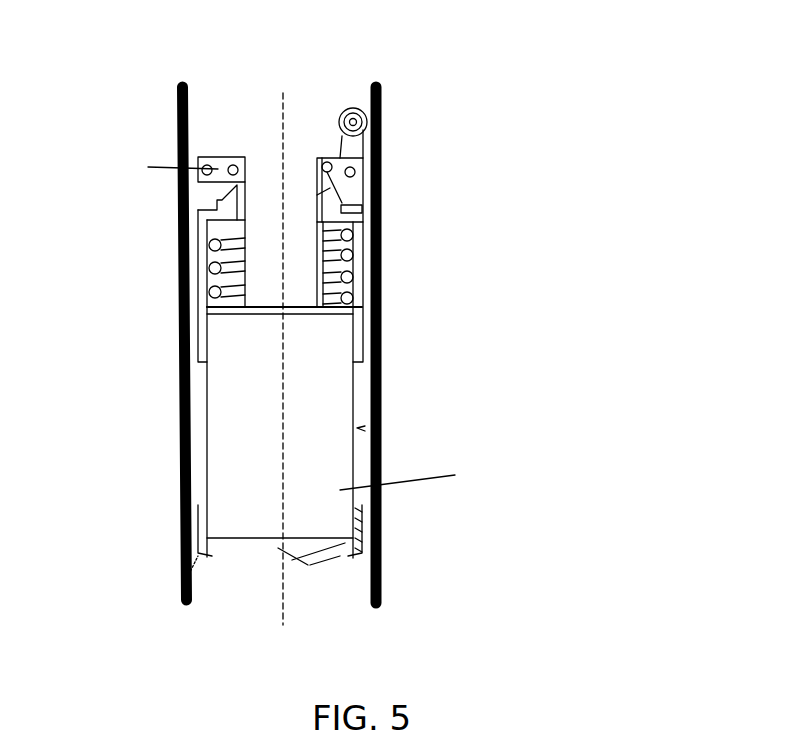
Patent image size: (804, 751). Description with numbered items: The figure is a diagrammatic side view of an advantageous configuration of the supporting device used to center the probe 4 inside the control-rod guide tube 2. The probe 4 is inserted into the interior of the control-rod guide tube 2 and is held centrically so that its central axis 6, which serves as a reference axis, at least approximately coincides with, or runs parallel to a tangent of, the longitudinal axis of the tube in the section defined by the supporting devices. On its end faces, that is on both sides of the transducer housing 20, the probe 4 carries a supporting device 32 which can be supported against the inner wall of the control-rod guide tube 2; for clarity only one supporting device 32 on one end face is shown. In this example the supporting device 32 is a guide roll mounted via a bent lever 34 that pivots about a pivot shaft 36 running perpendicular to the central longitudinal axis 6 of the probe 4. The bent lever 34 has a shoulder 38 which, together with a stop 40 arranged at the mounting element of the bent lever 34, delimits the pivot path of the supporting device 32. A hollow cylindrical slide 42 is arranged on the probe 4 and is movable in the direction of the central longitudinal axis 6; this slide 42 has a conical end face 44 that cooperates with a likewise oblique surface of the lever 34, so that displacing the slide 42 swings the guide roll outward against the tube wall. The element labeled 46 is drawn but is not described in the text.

The control-rod guide tube 2 is at (365, 565).
The probe 4 is at (357, 428).
The central axis 6 is at (287, 316).
The transducer housing 20 is at (227, 432).
The supporting device 32 is at (382, 122).
The bent lever 34 is at (353, 151).
The pivot shaft 36 is at (352, 174).
The shoulder 38 is at (322, 196).
The stop 40 is at (330, 170).
The hollow cylindrical slide 42 is at (350, 274).
The conical end face 44 is at (333, 190).
The spring housing 46 is at (328, 282).